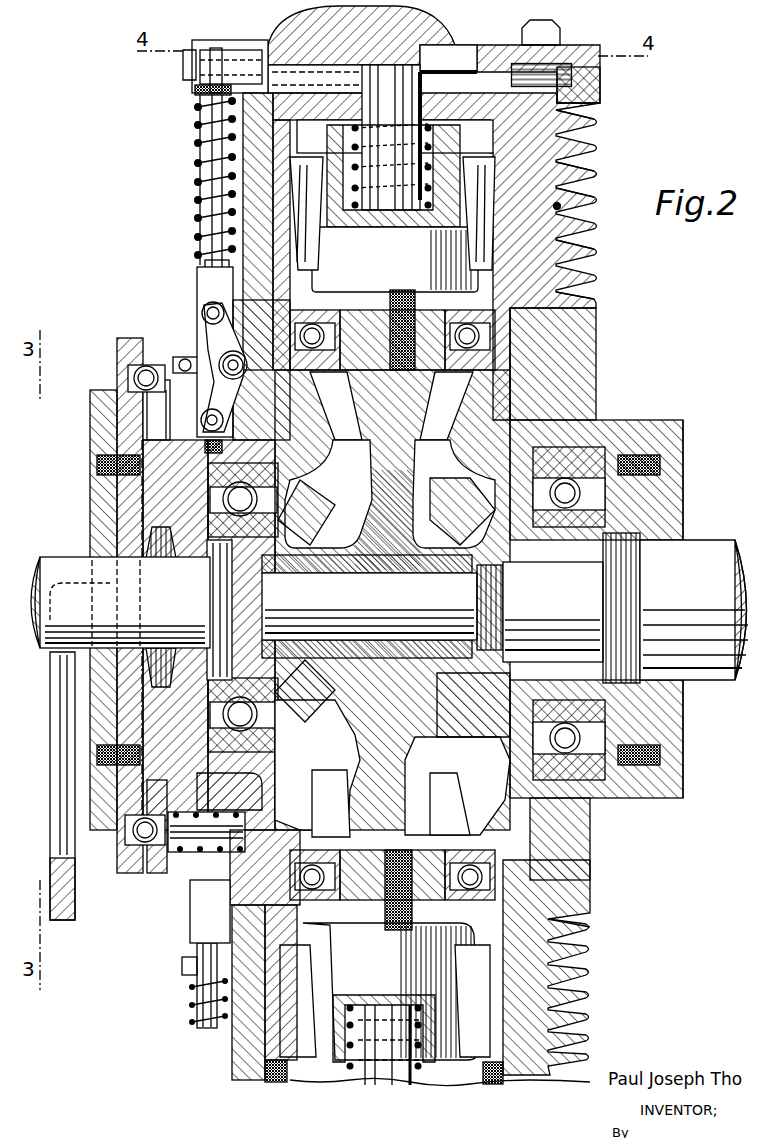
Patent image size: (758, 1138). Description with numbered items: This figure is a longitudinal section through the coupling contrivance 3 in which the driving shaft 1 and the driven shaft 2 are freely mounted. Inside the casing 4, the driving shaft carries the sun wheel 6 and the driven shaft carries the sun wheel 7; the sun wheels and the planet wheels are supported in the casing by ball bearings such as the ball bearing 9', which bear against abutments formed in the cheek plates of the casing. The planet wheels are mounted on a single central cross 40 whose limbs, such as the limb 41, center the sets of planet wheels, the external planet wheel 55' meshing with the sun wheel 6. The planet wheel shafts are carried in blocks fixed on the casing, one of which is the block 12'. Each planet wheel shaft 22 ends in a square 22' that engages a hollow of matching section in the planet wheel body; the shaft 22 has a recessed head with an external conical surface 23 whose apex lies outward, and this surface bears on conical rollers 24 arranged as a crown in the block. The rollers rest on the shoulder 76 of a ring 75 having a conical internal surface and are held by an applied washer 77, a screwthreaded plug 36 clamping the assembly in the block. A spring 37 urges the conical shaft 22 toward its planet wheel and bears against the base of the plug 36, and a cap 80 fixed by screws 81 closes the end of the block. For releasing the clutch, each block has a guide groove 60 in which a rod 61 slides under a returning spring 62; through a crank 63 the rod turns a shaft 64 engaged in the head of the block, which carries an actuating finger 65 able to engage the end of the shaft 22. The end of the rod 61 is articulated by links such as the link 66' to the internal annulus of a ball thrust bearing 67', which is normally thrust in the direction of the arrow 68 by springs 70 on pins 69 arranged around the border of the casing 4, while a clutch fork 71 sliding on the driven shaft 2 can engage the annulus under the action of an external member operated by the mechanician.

The driving shaft 1 is at (717, 548).
The driven shaft 2 is at (55, 563).
The coupling contrivance 3 is at (640, 423).
The casing 4 is at (592, 413).
The sun wheel of the driving shaft 6 is at (490, 425).
The sun wheel of the driven shaft 7 is at (282, 518).
The ball bearing 9' is at (457, 760).
The block 12' is at (591, 183).
The shaft 22 is at (387, 605).
The square 22' is at (392, 610).
The external conical surface 23 is at (560, 207).
The conical rollers 24 is at (575, 163).
The screwthreaded plug 36 is at (492, 107).
The spring 37 is at (430, 127).
The central cross 40 is at (338, 745).
The limb 41 is at (468, 512).
The external planet wheel 55' is at (536, 364).
The guide groove 60 is at (223, 110).
The rod 61 is at (210, 133).
The returning spring 62 is at (198, 163).
The crank 63 is at (210, 62).
The shaft 64 is at (465, 58).
The actuating finger 65 is at (400, 57).
The link 66' is at (217, 353).
The ball thrust bearing annulus 67' is at (116, 584).
The arrow 68 is at (82, 968).
The pins 69 is at (200, 832).
The springs 70 is at (202, 862).
The clutch fork 71 is at (60, 740).
The ring 75 is at (563, 302).
The shoulder 76 is at (567, 250).
The applied washer 77 is at (557, 135).
The cap 80 is at (578, 62).
The screws 81 is at (562, 33).